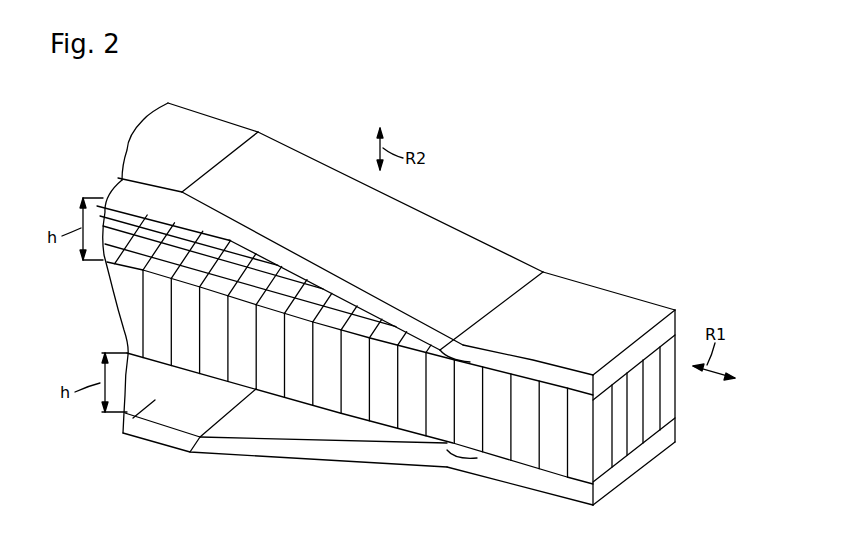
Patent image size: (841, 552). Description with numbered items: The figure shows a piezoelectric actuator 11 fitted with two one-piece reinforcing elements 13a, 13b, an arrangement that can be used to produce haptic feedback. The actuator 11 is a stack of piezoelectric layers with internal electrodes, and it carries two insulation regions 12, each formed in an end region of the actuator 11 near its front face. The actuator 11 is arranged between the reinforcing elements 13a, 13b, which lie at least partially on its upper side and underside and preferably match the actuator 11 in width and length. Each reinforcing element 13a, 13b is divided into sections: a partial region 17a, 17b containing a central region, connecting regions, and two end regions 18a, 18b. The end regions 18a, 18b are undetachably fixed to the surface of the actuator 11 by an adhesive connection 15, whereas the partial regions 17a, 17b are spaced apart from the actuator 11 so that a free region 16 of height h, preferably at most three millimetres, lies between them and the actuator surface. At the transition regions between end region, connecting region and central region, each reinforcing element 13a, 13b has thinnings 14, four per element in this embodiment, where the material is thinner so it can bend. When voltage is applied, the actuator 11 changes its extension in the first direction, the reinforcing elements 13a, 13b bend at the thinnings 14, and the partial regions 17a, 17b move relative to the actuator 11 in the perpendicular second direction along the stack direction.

The piezoelectric actuator 11 is at (508, 472).
The insulation region 12 is at (677, 393).
The reinforcing element 13a is at (440, 226).
The reinforcing element 13b is at (303, 452).
The thinning 14 is at (267, 150).
The adhesive connection 15 is at (548, 382).
The free region 16 is at (110, 280).
The partial region 17a is at (213, 128).
The partial region 17b is at (377, 462).
The end region 18a is at (613, 293).
The end region 18b is at (623, 475).